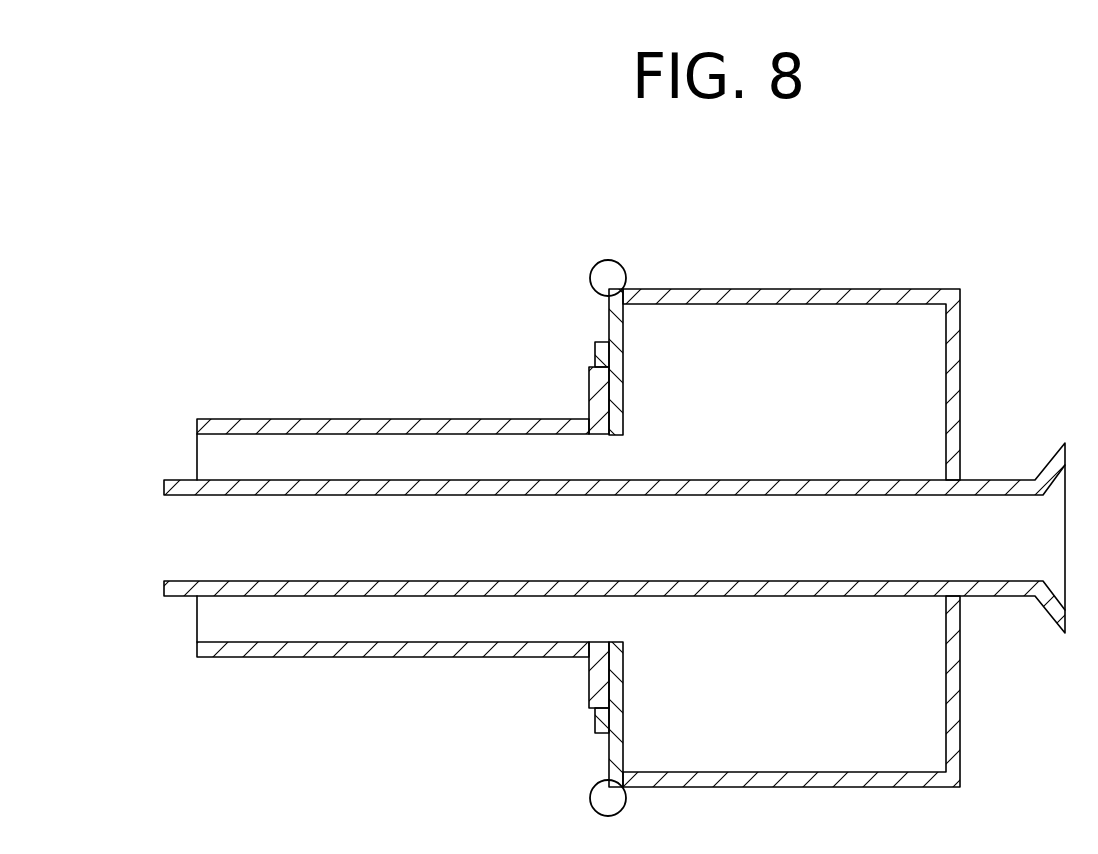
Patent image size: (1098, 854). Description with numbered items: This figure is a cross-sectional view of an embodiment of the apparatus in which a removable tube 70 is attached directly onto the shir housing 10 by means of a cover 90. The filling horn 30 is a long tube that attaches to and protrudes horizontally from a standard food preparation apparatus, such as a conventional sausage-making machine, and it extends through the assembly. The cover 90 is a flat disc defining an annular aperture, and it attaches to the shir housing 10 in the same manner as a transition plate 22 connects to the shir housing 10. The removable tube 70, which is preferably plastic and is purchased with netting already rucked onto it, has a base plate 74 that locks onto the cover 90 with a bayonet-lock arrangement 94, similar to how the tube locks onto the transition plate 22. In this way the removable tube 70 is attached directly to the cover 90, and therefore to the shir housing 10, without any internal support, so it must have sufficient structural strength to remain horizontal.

The shir housing 10 is at (852, 290).
The transition plate 22 is at (623, 330).
The filling horn 30 is at (983, 510).
The removable tube 70 is at (294, 419).
The base plate 74 is at (590, 382).
The cover 90 is at (592, 314).
The bayonet-lock arrangement 94 is at (595, 353).